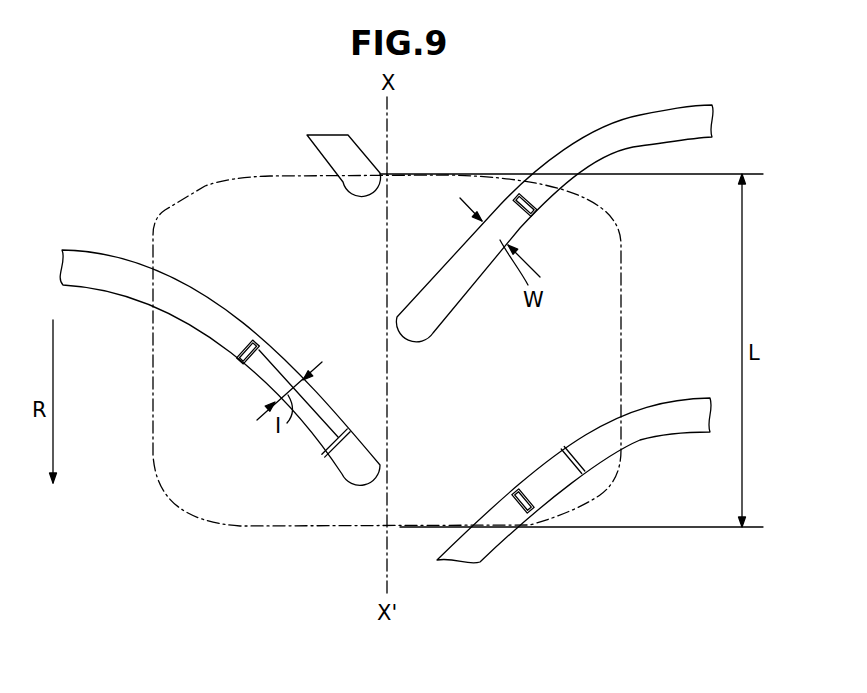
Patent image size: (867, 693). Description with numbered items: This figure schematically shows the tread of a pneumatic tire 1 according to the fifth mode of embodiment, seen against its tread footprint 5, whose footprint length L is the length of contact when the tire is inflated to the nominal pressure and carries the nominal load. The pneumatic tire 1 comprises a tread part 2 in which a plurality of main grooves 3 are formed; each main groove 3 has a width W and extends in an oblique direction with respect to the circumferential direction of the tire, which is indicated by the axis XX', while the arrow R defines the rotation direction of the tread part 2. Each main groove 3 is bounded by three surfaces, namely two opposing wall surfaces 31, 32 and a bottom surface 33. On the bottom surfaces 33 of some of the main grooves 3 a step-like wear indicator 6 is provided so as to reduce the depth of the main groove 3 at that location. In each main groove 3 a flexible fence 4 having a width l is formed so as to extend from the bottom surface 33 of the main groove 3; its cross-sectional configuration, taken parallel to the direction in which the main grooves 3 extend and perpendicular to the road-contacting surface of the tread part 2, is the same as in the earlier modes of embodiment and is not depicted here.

The pneumatic tire 1 is at (593, 328).
The tread part 2 is at (313, 298).
The main groove 3 is at (363, 147).
The flexible fence 4 is at (250, 363).
The tread footprint 5 is at (210, 185).
The step-like wear indicator 6 is at (337, 460).
The wall surface 31 is at (215, 306).
The wall surface 32 is at (187, 322).
The bottom surface 33 is at (320, 418).